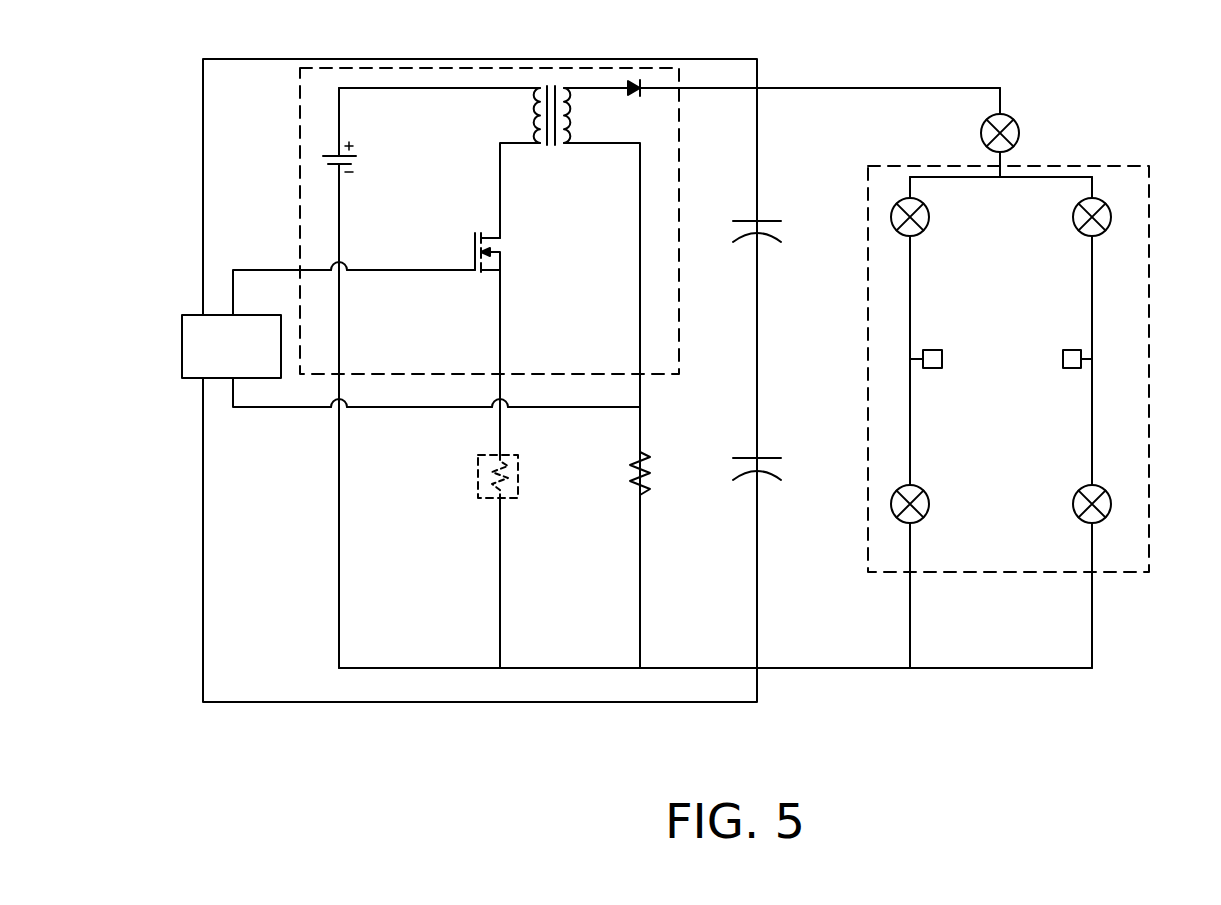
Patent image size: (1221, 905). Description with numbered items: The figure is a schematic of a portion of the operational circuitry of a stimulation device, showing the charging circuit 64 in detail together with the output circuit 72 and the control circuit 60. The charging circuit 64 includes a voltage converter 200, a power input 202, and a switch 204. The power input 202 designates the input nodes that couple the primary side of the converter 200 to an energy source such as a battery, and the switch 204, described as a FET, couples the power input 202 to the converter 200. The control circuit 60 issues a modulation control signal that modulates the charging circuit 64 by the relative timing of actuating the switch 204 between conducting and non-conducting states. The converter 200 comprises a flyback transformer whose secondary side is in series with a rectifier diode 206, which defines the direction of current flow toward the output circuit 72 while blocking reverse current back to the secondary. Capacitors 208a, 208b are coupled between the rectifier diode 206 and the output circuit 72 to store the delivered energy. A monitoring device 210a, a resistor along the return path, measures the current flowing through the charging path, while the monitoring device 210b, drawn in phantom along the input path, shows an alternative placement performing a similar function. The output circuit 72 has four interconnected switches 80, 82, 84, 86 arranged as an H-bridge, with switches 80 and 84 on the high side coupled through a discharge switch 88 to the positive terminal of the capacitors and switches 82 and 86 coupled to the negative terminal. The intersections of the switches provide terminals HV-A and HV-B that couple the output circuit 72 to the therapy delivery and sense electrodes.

The control circuit 60 is at (182, 345).
The charging circuit 64 is at (300, 193).
The output circuit 72 is at (1152, 258).
The switch 80 is at (927, 225).
The switch 82 is at (928, 512).
The switch 84 is at (1075, 225).
The switch 86 is at (1075, 512).
The discharge switch 88 is at (1022, 130).
The voltage converter 200 is at (583, 113).
The power input 202 is at (375, 160).
The switch 204 is at (522, 250).
The rectifier diode 206 is at (635, 108).
The capacitor 208a is at (783, 228).
The capacitor 208b is at (783, 465).
The monitoring device 210a is at (610, 468).
The monitoring device 210b is at (522, 476).
The HV-A terminal HV-A is at (928, 350).
The HV-B terminal HV-B is at (1073, 368).